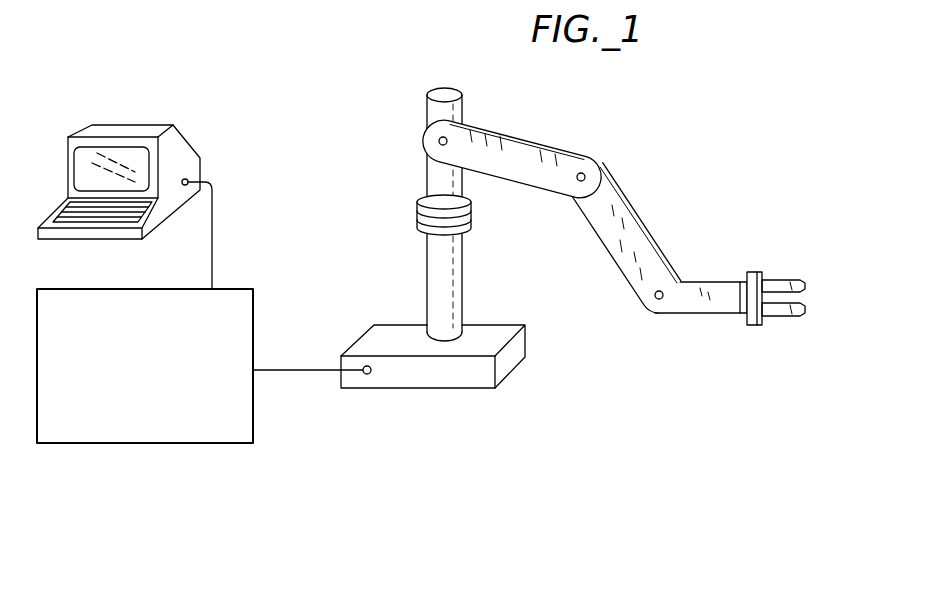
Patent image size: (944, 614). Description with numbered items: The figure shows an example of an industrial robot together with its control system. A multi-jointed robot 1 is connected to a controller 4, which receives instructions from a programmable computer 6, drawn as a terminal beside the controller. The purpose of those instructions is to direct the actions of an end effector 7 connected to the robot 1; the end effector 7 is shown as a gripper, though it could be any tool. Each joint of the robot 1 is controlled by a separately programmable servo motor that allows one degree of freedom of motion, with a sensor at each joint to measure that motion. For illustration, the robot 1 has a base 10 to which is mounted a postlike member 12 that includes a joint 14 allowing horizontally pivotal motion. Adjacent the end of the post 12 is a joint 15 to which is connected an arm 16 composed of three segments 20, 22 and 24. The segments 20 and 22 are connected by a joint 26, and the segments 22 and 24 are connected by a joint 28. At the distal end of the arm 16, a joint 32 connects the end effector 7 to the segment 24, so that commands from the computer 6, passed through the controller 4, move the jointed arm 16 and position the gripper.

The multi-jointed robot 1 is at (348, 190).
The controller 4 is at (235, 270).
The programmable computer 6 is at (177, 131).
The end effector 7 is at (770, 320).
The base 10 is at (527, 343).
The postlike member 12 is at (467, 288).
The joint 14 is at (471, 207).
The joint 15 is at (425, 128).
The arm 16 is at (662, 208).
The segment 20 is at (527, 133).
The segment 22 is at (607, 251).
The segment 24 is at (702, 282).
The joint 26 is at (579, 182).
The joint 28 is at (655, 314).
The joint 32 is at (740, 315).